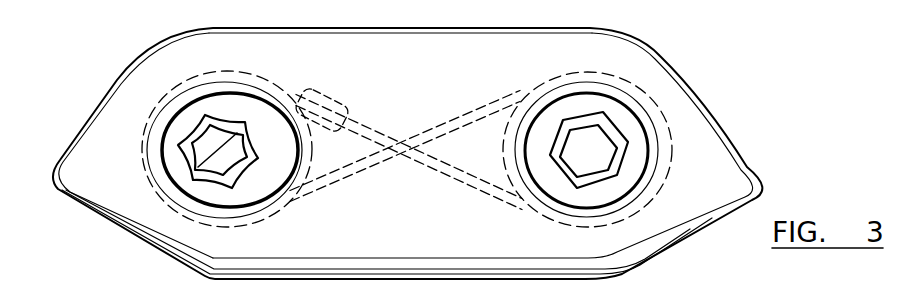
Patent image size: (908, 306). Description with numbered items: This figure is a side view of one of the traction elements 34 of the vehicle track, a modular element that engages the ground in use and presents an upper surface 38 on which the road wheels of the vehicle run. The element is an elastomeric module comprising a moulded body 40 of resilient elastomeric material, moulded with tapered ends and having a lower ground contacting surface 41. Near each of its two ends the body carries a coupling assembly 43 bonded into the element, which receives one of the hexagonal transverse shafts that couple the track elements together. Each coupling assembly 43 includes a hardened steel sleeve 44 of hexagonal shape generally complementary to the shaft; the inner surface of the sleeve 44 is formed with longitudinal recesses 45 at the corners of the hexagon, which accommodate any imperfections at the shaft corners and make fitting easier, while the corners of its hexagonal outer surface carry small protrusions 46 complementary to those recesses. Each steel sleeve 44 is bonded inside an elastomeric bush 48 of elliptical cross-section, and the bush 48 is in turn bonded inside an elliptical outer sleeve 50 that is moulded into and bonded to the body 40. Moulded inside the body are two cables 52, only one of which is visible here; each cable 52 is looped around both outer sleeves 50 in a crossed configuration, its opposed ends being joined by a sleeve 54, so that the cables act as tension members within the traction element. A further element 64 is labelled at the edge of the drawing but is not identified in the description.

The traction element 34 is at (728, 117).
The upper surface 38 is at (453, 28).
The moulded body 40 is at (675, 80).
The lower ground contacting surface 41 is at (369, 281).
The coupling assembly 43 is at (208, 77).
The hardened steel sleeve 44 is at (249, 142).
The longitudinal recesses 45 is at (198, 164).
The small protrusions 46 is at (205, 115).
The bush 48 is at (243, 110).
The outer sleeve 50 is at (160, 180).
The cables 52 is at (368, 164).
The sleeve 54 is at (327, 108).
The element 64 is at (657, 6).